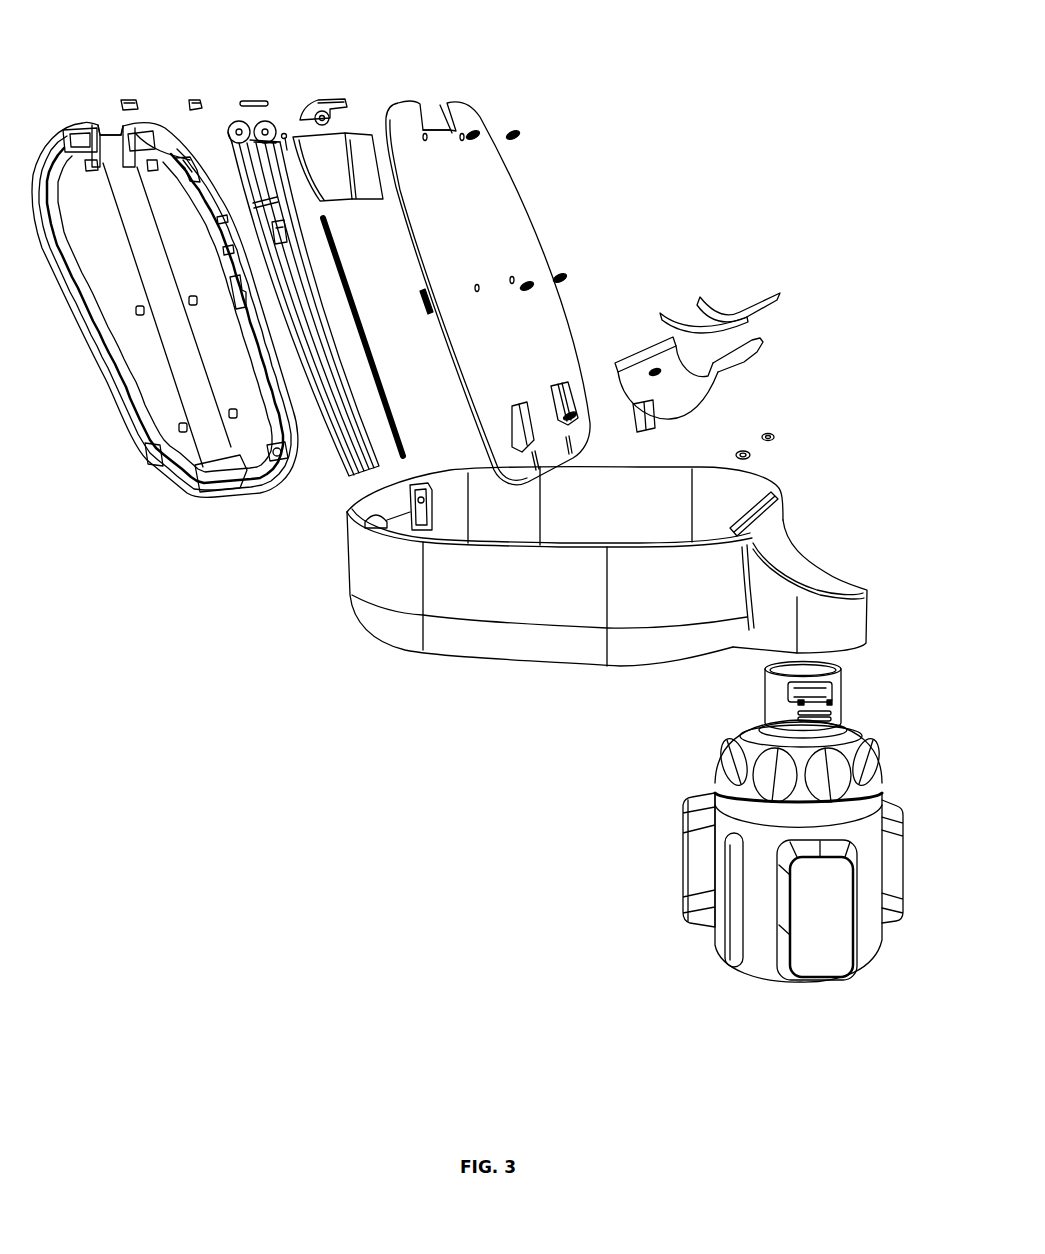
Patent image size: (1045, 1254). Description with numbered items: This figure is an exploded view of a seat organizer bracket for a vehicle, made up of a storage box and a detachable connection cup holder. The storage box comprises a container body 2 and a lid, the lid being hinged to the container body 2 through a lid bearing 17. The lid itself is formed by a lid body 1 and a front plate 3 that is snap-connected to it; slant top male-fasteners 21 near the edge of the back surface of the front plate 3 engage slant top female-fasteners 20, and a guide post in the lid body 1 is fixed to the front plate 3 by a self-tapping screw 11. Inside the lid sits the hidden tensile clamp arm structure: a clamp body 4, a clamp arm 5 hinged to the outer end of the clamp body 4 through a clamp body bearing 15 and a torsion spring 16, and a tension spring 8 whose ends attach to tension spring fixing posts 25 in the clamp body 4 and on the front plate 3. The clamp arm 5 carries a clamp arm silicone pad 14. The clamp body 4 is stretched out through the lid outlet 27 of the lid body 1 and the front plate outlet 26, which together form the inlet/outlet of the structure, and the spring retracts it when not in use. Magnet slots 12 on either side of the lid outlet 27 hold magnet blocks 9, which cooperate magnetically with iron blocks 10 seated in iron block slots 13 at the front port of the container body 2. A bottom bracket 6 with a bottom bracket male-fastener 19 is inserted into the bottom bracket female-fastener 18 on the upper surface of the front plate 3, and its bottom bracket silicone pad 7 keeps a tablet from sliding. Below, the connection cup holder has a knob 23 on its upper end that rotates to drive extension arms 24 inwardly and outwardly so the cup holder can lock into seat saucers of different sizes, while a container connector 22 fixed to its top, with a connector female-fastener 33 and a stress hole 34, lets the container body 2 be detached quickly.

The lid body 1 is at (165, 309).
The container body 2 is at (607, 587).
The front plate 3 is at (488, 293).
The clamp body 4 is at (303, 332).
The clamp arm 5 is at (348, 133).
The bottom bracket 6 is at (689, 398).
The bottom bracket silicone pad 7 is at (720, 283).
The tension spring 8 is at (325, 402).
The magnet block 9 is at (177, 84).
The iron block 10 is at (784, 410).
The self-tapping screw 11 is at (519, 186).
The magnet slot 12 is at (64, 114).
The iron block slot 13 is at (781, 490).
The clamp arm silicone pad 14 is at (349, 80).
The clamp body bearing 15 is at (274, 76).
The torsion spring 16 is at (324, 80).
The lid bearing 17 is at (356, 569).
The bottom bracket female-fastener 18 is at (601, 347).
The bottom bracket male-fastener 19 is at (625, 432).
The slant top female-fastener 20 is at (120, 276).
The slant top male-fastener 21 is at (407, 322).
The container connector 22 is at (833, 689).
The knob 23 is at (833, 838).
The extension arm 24 is at (757, 911).
The tension spring fixing post 25 is at (204, 377).
The front plate outlet 26 is at (457, 87).
The lid outlet 27 is at (90, 111).
The connector female-fastener 33 is at (845, 690).
The stress hole 34 is at (845, 708).